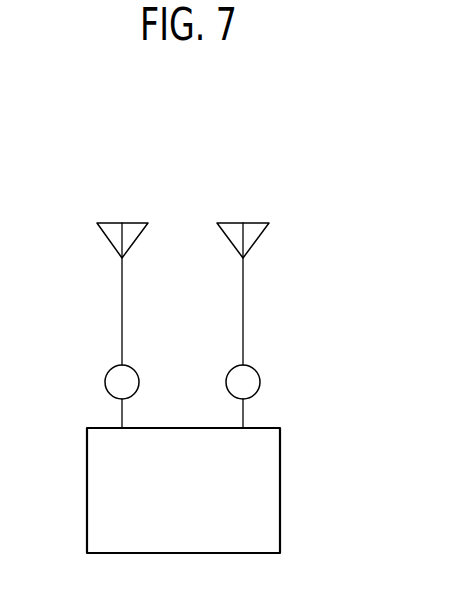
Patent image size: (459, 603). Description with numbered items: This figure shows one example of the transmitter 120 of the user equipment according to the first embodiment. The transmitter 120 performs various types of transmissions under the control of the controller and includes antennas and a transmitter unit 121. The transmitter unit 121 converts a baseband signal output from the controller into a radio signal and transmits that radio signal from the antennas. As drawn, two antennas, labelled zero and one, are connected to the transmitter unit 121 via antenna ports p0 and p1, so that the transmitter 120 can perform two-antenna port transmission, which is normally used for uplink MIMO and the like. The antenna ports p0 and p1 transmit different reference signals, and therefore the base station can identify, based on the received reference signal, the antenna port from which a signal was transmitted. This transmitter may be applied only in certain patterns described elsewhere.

The transmitter 120 is at (204, 135).
The transmitter unit 121 is at (281, 492).
The antenna port p0 is at (107, 370).
The antenna port p1 is at (257, 370).